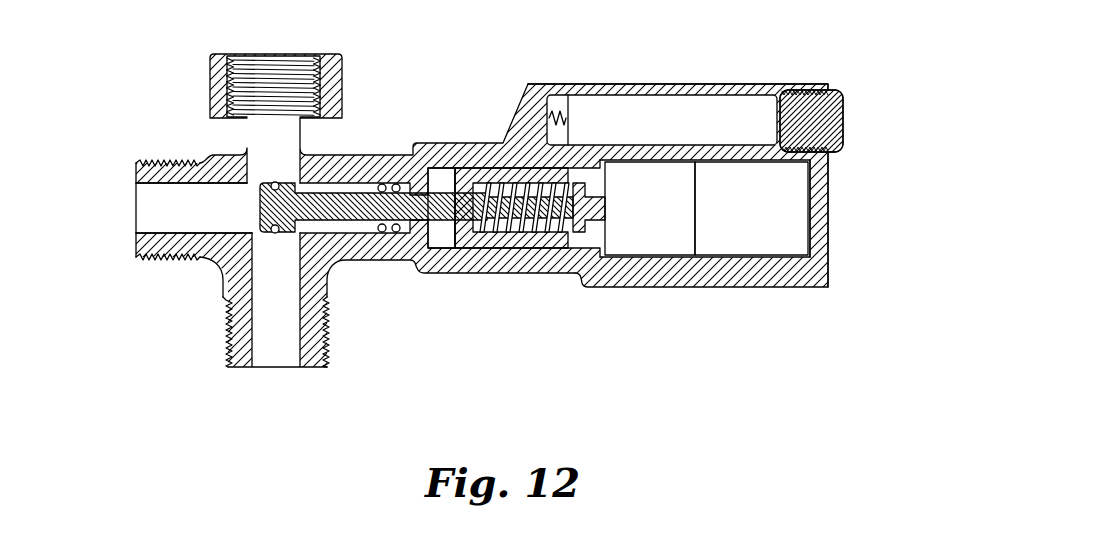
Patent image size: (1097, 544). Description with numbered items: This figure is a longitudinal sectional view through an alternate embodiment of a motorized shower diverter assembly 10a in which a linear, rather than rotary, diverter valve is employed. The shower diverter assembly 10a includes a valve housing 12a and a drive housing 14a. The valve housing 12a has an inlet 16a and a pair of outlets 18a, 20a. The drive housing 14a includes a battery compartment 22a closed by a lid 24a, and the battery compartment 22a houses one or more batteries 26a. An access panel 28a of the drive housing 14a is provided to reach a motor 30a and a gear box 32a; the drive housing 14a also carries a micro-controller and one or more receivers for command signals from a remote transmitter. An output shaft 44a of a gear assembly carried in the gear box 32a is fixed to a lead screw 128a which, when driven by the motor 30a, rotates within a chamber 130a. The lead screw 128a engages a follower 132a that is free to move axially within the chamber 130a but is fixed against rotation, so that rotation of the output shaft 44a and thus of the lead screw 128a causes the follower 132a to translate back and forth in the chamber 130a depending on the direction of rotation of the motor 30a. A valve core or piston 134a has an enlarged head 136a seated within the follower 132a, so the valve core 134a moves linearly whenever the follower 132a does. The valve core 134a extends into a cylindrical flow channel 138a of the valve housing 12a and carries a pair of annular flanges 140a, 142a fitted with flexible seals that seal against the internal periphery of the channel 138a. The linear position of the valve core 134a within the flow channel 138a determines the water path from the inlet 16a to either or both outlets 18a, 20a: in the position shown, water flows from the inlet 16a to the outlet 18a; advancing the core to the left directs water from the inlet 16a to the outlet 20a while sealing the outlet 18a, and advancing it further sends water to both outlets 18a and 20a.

The motorized shower diverter assembly 10a is at (370, 385).
The valve housing 12a is at (343, 152).
The drive housing 14a is at (713, 288).
The inlet 16a is at (210, 54).
The outlet 18a is at (135, 176).
The outlet 20a is at (236, 340).
The battery compartment 22a is at (735, 83).
The lid 24a is at (846, 118).
The batteries 26a is at (600, 120).
The access panel 28a is at (832, 228).
The motor 30a is at (760, 233).
The gear box 32a is at (657, 236).
The output shaft 44a is at (579, 240).
The lead screw 128a is at (543, 238).
The chamber 130a is at (441, 176).
The follower 132a is at (476, 247).
The valve core or piston 134a is at (357, 207).
The enlarged head 136a is at (480, 181).
The cylindrical flow channel 138a is at (228, 214).
The annular flange 140a is at (262, 198).
The annular flange 142a is at (370, 187).